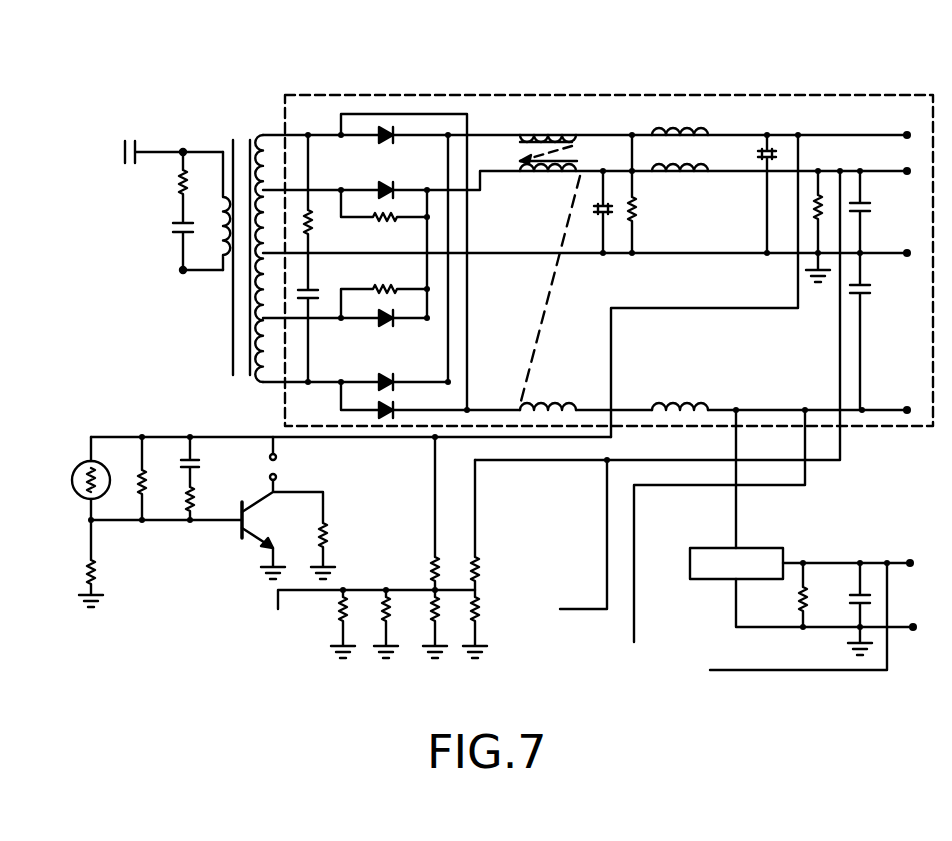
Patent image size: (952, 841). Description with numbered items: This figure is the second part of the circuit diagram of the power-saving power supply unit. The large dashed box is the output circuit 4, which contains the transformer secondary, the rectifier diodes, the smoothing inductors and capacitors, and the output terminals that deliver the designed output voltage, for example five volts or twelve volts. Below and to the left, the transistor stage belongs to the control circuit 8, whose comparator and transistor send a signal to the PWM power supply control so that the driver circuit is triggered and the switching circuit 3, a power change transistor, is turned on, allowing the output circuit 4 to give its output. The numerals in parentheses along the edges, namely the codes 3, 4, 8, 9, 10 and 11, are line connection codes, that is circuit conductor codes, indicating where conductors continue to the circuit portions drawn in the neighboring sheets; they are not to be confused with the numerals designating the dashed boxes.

The switching circuit 3 is at (125, 152).
The output circuit 4 is at (492, 95).
The control circuit 8 is at (278, 609).
The output terminal 9 is at (564, 542).
The line connection code 10 is at (634, 642).
The line connection code 11 is at (769, 624).